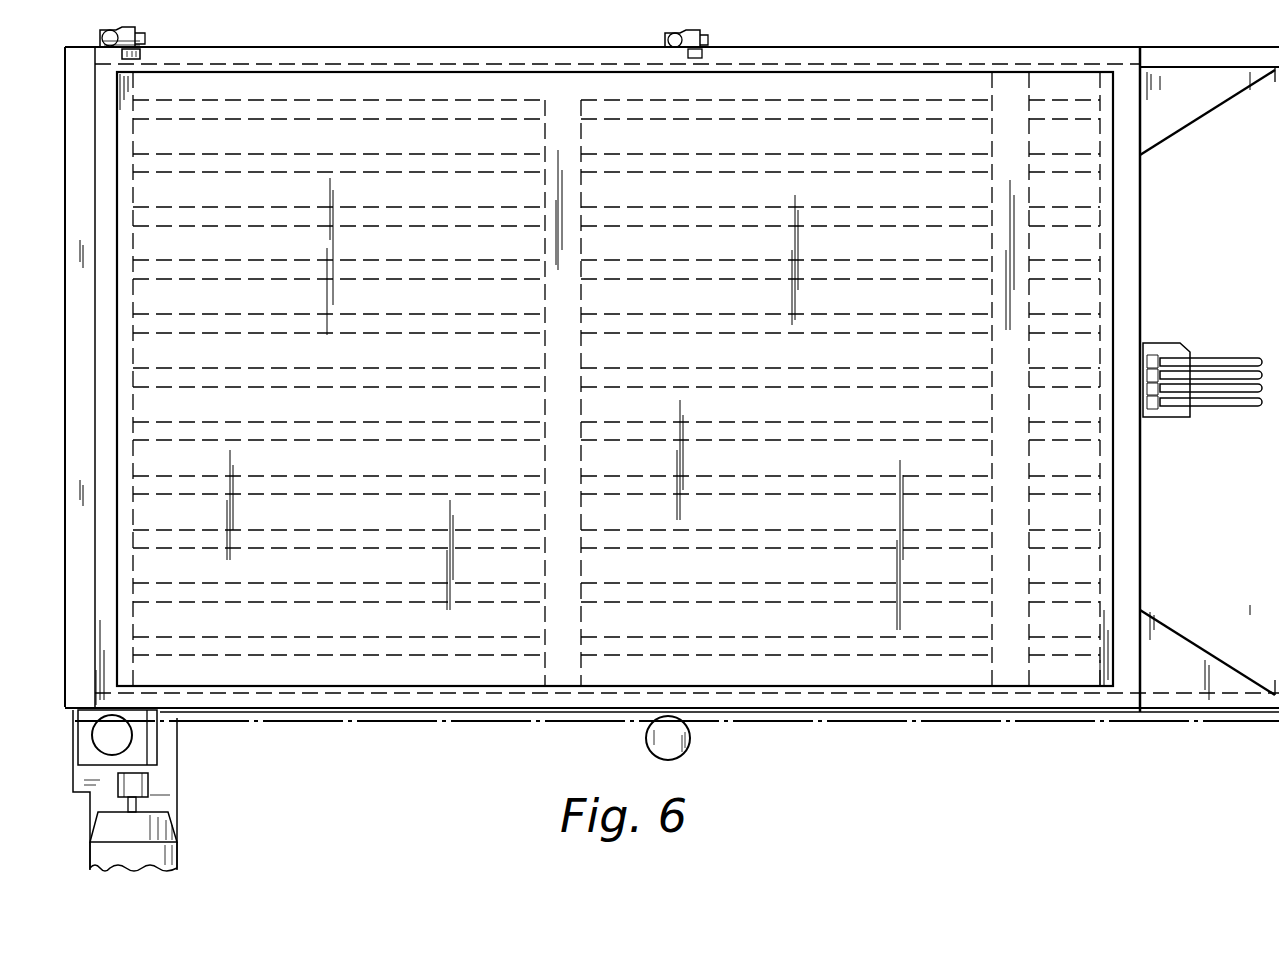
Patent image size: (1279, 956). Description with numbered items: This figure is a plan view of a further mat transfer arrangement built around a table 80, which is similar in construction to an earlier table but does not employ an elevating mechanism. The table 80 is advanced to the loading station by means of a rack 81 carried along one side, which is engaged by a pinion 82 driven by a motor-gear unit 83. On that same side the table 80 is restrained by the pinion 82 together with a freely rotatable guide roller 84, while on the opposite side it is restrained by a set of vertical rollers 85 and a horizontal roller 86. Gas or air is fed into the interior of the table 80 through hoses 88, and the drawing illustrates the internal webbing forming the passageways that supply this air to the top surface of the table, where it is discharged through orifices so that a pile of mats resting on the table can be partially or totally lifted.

The table 80 is at (478, 728).
The rack 81 is at (303, 716).
The pinion 82 is at (94, 738).
The motor-gear unit 83 is at (172, 848).
The guide roller 84 is at (691, 738).
The vertical rollers 85 is at (143, 52).
The horizontal roller 86 is at (102, 33).
The hoses 88 is at (1213, 408).